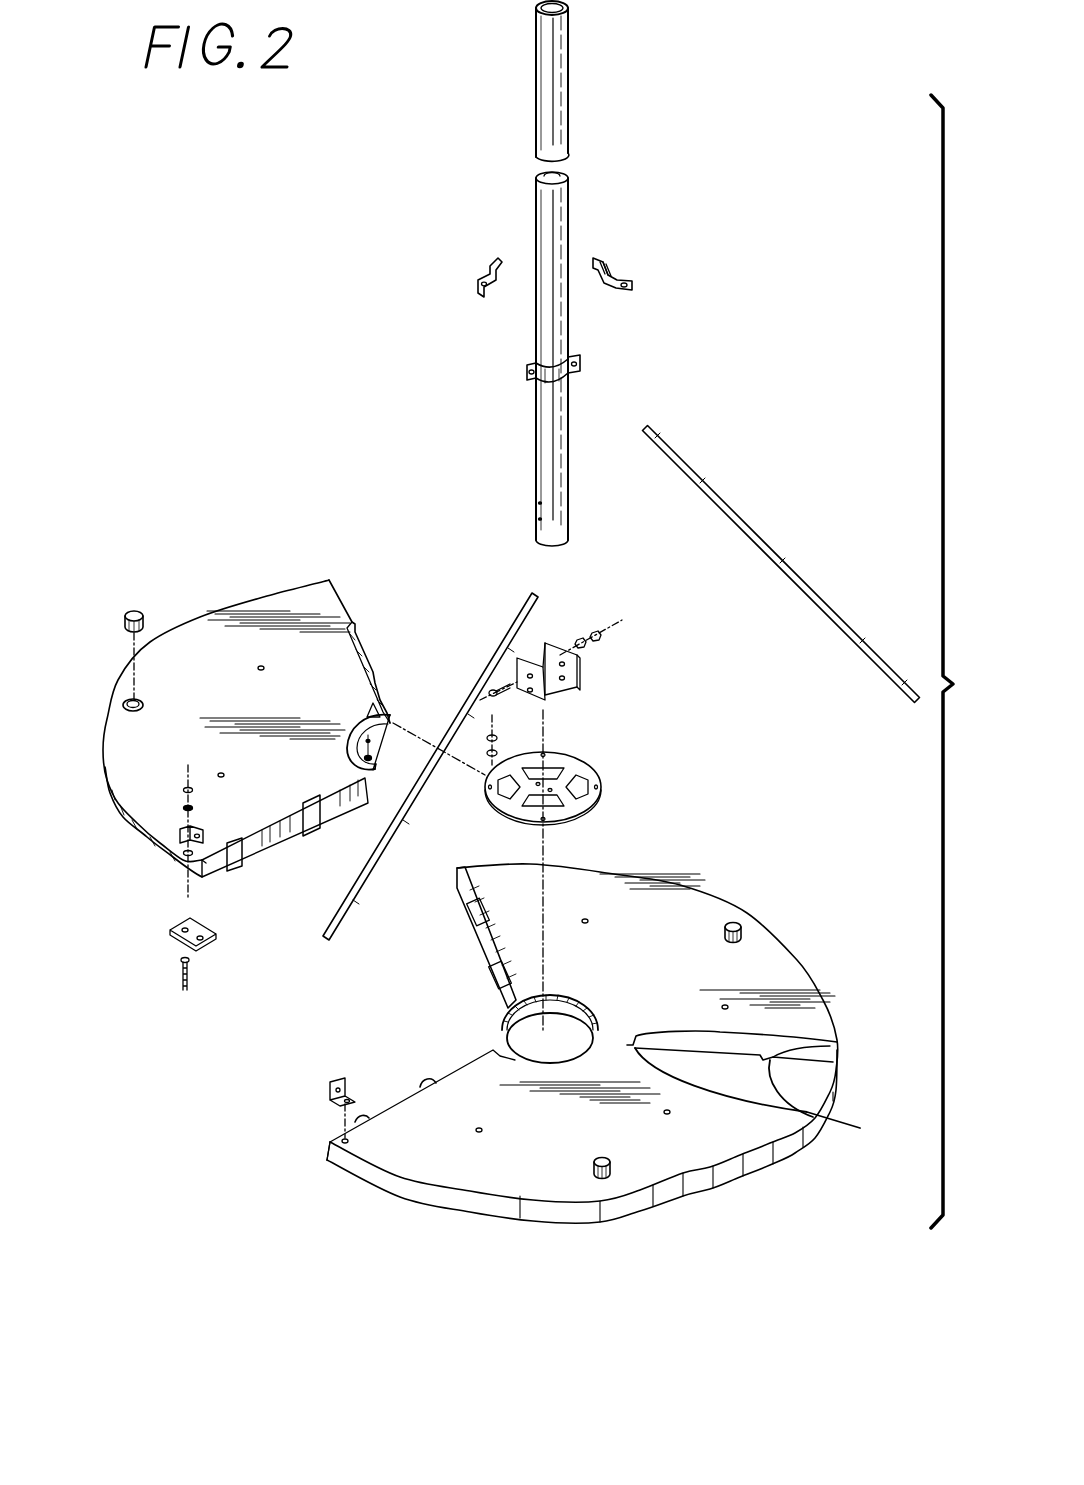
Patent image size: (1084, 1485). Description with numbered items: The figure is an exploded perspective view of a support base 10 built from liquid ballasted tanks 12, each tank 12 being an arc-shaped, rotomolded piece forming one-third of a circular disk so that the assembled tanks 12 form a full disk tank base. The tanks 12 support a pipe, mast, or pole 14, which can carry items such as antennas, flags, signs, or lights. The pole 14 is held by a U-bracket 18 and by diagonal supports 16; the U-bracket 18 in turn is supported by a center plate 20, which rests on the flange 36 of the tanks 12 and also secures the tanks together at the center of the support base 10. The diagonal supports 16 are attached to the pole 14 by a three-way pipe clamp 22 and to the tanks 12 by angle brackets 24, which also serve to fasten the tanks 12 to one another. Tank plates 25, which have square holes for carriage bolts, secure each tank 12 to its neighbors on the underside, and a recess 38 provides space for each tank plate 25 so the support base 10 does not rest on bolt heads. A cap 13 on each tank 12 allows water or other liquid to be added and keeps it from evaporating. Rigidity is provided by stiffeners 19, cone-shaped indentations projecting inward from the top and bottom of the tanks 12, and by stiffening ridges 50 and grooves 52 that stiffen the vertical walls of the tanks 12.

The support base 10 is at (283, 435).
The liquid ballasted tank 12 is at (285, 586).
The cap 13 is at (134, 612).
The pole 14 is at (569, 85).
The diagonal supports 16 is at (776, 558).
The U-bracket 18 is at (580, 670).
The stiffeners 19 is at (264, 666).
The center plate 20 is at (603, 782).
The three-way pipe clamp 22 is at (527, 373).
The angle brackets 24 is at (187, 833).
The tank plates 25 is at (172, 935).
The flange 36 is at (383, 755).
The recess 38 is at (206, 882).
The stiffening ridges 50 is at (356, 628).
The grooves 52 is at (312, 830).